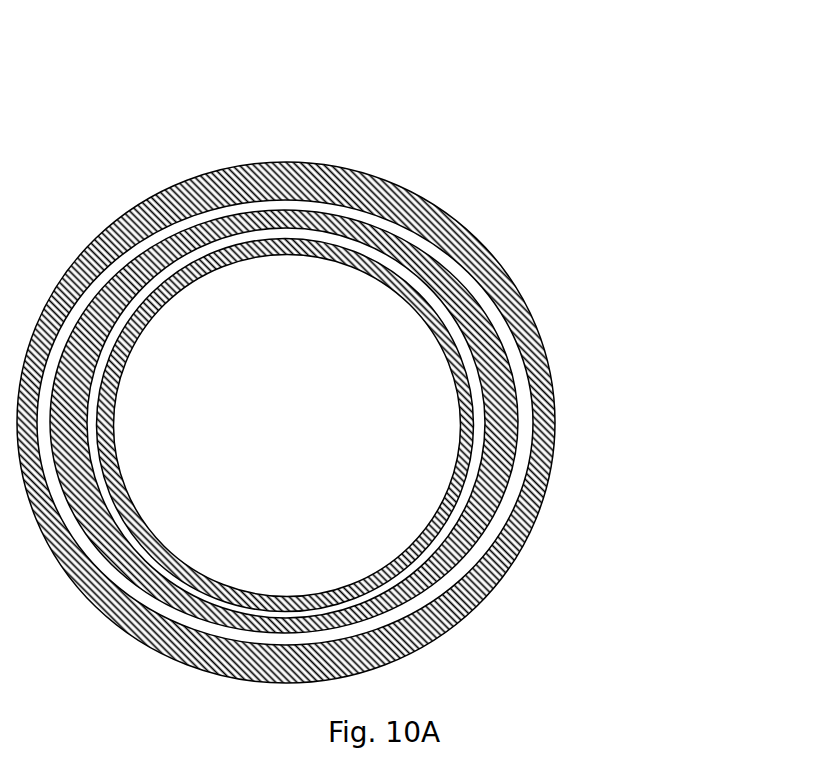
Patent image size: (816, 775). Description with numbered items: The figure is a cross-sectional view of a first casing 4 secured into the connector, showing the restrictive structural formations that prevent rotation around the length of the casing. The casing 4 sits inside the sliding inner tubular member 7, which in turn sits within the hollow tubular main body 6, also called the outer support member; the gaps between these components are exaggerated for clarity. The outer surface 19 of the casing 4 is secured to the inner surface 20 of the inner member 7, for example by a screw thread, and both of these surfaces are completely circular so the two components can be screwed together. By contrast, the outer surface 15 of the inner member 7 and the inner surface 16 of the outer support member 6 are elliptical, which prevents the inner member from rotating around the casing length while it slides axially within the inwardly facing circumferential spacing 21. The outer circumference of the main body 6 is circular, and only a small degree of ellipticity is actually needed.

The first casing 4 is at (472, 415).
The hollow tubular main body 6 is at (513, 542).
The inner tubular member 7 is at (500, 470).
The outer surface of the inner member 15 is at (372, 223).
The inner surface of outer support member 16 is at (328, 195).
The outer surface of the casing 19 is at (433, 300).
The inner surface of the sliding inner member 20 is at (402, 253).
The inwardly facing circumferential spacing 21 is at (295, 158).